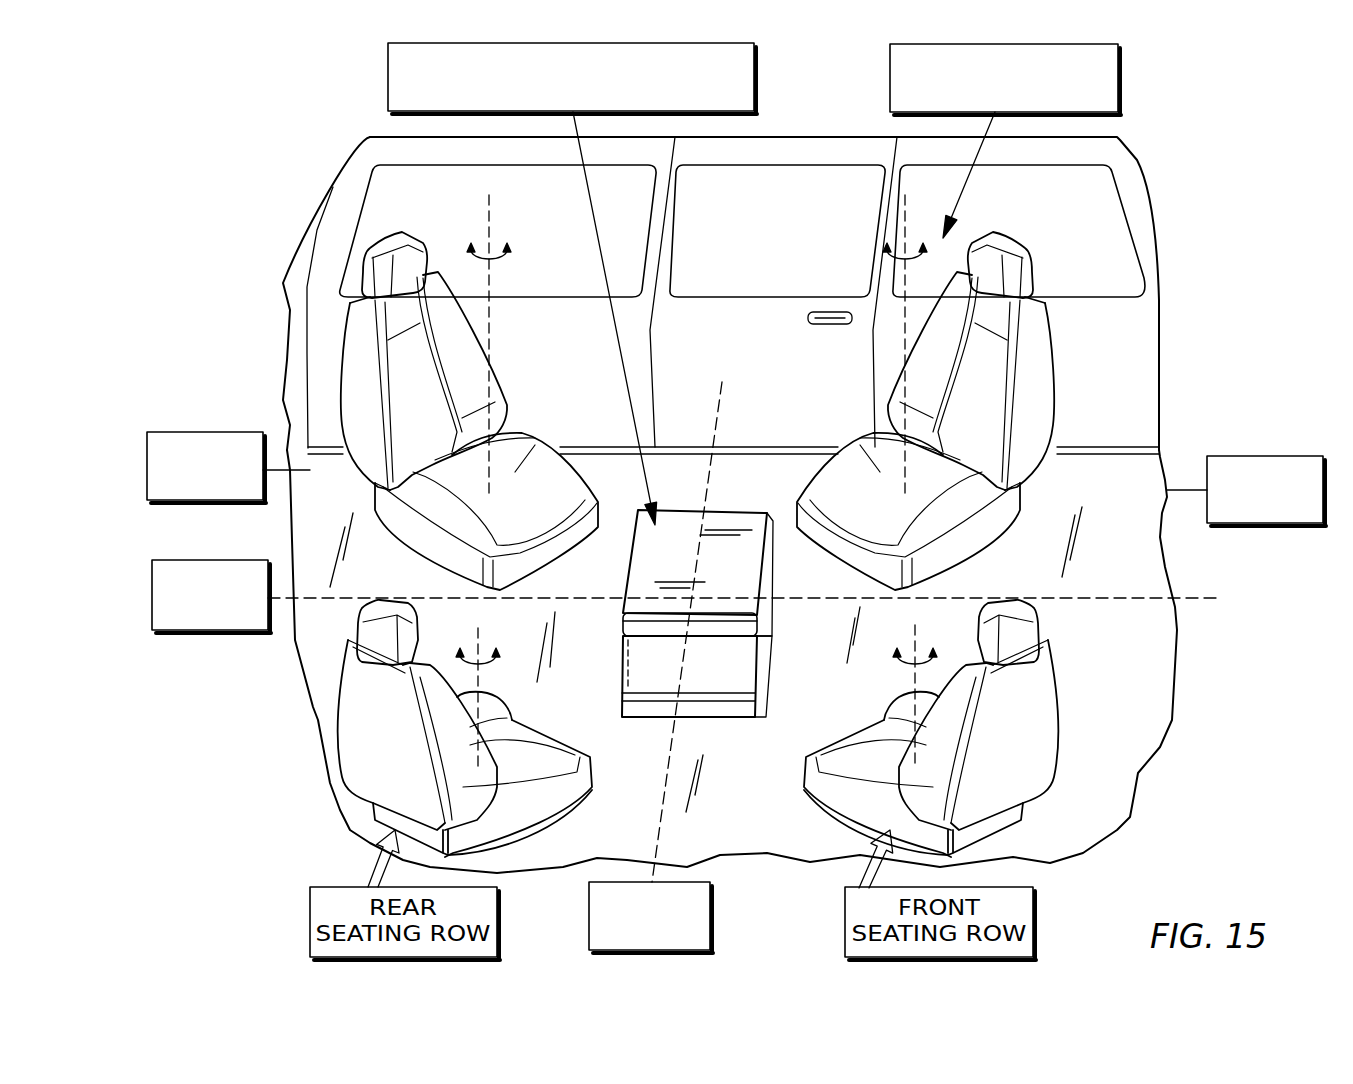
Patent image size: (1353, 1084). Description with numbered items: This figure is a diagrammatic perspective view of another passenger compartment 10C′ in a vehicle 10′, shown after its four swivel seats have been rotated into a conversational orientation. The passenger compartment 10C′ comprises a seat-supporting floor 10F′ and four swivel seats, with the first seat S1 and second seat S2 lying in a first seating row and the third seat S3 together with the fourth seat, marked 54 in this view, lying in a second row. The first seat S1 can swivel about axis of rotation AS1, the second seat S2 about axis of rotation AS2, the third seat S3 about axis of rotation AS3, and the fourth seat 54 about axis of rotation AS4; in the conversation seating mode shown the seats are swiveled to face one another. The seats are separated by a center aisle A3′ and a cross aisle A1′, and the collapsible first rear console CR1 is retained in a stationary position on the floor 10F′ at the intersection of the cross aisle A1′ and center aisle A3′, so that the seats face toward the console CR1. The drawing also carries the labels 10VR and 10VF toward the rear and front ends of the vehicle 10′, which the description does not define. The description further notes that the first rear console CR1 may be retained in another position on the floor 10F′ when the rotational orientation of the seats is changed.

The vehicle 10′ is at (779, 293).
The passenger compartment 10C′ is at (1118, 75).
The floor 10F′ is at (1153, 585).
The vehicle rear 10VR is at (183, 432).
The vehicle front 10VF is at (1263, 456).
The center aisle A3′ is at (152, 596).
The cross aisle A1′ is at (712, 917).
The collapsible first rear console CR1 is at (388, 73).
The seat 54 is at (398, 411).
The first seat S1 is at (972, 728).
The second seat S2 is at (1001, 411).
The third seat S3 is at (423, 728).
The axis of rotation AS1 is at (913, 684).
The axis of rotation AS2 is at (905, 237).
The axis of rotation AS3 is at (478, 643).
The axis of rotation AS4 is at (492, 222).